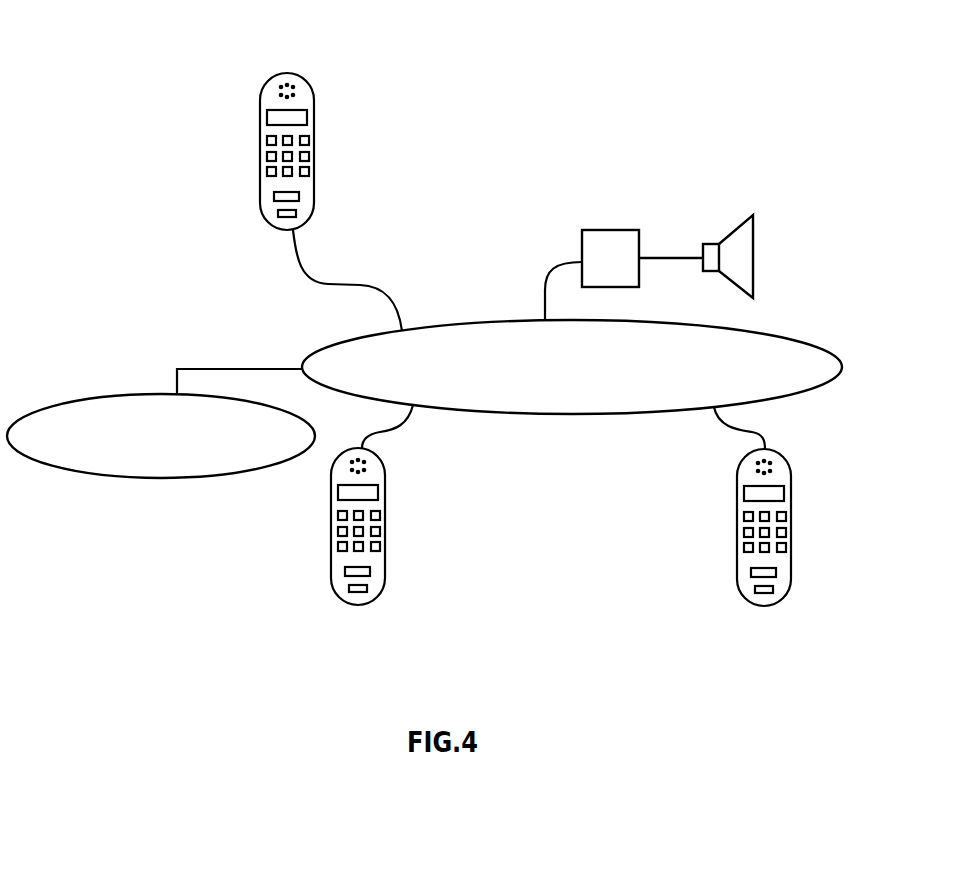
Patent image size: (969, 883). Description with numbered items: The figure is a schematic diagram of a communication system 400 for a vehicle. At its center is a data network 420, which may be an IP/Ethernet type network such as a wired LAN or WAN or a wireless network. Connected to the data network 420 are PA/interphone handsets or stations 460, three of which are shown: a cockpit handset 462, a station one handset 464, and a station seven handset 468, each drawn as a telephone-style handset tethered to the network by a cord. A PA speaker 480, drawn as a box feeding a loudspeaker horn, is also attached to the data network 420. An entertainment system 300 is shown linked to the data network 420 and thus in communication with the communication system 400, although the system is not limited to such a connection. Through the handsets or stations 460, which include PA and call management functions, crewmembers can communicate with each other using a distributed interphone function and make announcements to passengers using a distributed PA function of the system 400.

The communication system 400 is at (658, 82).
The entertainment system 300 is at (152, 478).
The data network 420 is at (573, 414).
The PA/interphone handsets or stations 460 is at (778, 526).
The cockpit 462 is at (260, 137).
The station 1 464 is at (384, 563).
The station 7 468 is at (737, 527).
The PA speaker 480 is at (737, 228).